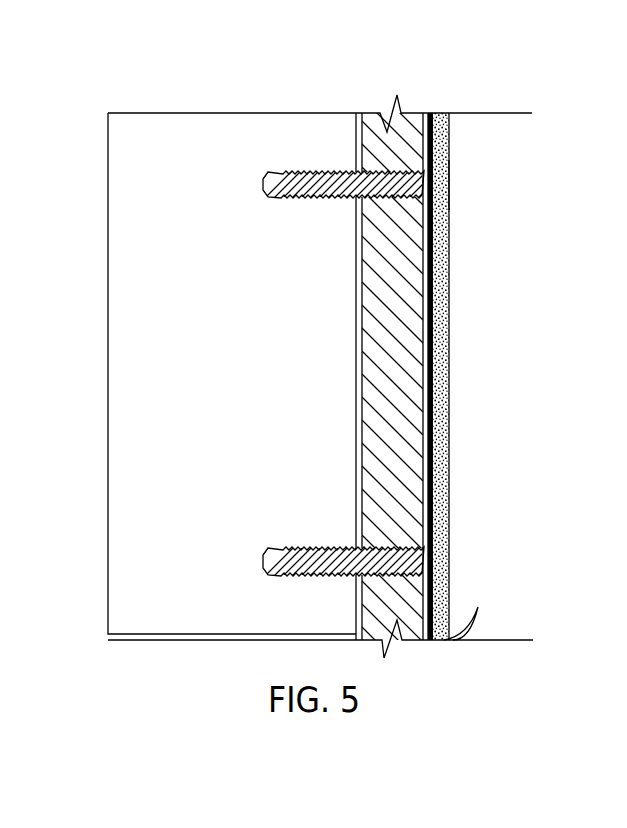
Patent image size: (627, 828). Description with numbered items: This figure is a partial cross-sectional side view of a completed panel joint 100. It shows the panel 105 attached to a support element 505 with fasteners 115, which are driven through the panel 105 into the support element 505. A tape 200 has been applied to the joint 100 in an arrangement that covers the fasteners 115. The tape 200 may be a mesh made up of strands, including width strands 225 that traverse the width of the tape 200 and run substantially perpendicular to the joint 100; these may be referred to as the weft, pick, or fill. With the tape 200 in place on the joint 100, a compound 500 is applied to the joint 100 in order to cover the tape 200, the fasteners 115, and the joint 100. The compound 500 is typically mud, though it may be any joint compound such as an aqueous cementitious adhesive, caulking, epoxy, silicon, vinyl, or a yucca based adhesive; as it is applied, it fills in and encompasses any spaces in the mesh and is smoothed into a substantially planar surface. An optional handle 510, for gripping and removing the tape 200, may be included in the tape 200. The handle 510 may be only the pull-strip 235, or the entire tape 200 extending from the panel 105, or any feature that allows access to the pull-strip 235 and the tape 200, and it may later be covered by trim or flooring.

The joint 100 is at (387, 70).
The panel 105 is at (407, 388).
The fasteners 115 is at (302, 198).
The tape 200 is at (443, 289).
The width strands 225 is at (452, 245).
The pull-strip 235 is at (452, 326).
The compound 500 is at (452, 183).
The support element 505 is at (217, 367).
The handle 510 is at (483, 612).